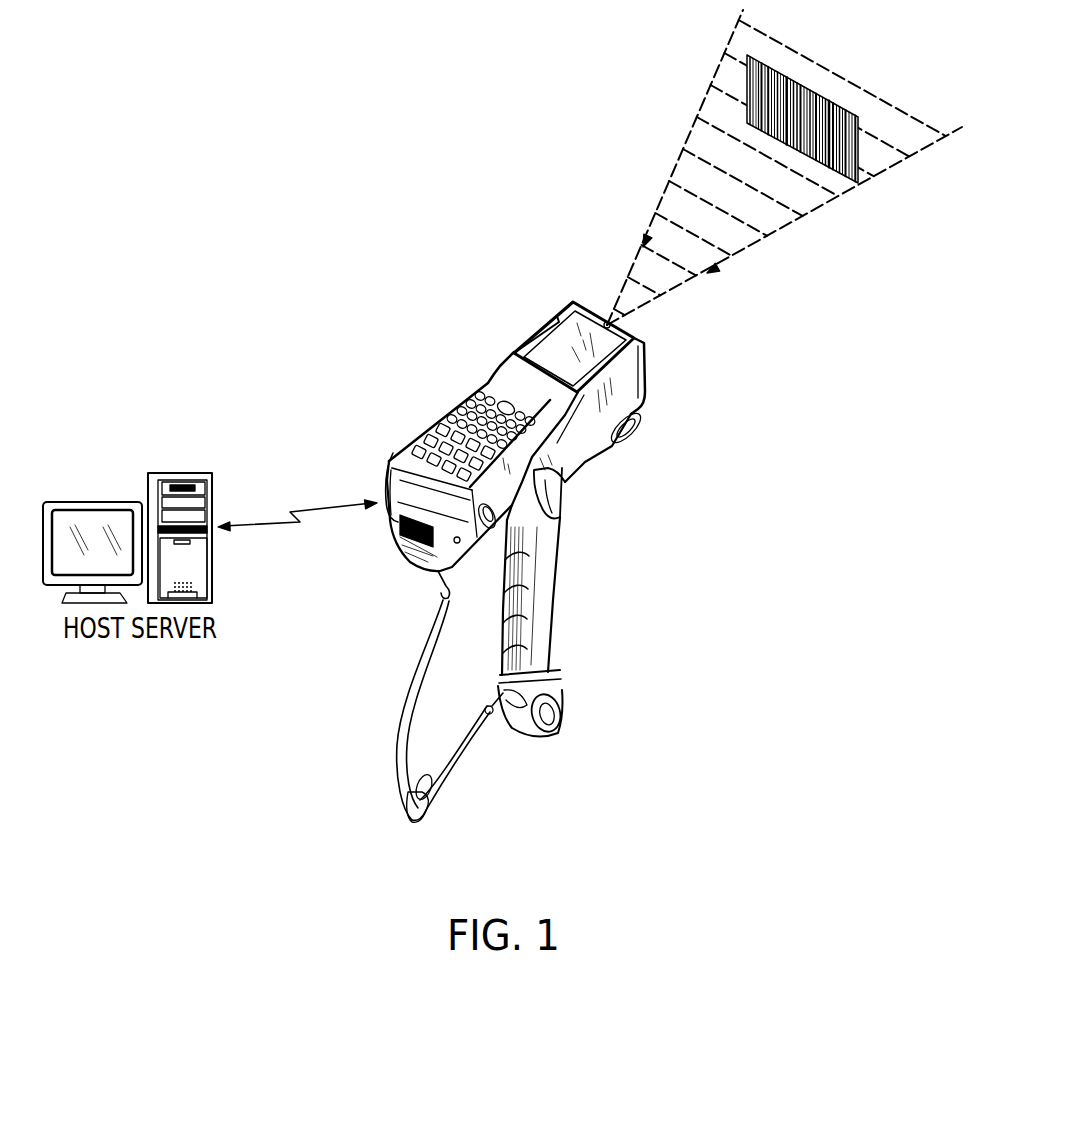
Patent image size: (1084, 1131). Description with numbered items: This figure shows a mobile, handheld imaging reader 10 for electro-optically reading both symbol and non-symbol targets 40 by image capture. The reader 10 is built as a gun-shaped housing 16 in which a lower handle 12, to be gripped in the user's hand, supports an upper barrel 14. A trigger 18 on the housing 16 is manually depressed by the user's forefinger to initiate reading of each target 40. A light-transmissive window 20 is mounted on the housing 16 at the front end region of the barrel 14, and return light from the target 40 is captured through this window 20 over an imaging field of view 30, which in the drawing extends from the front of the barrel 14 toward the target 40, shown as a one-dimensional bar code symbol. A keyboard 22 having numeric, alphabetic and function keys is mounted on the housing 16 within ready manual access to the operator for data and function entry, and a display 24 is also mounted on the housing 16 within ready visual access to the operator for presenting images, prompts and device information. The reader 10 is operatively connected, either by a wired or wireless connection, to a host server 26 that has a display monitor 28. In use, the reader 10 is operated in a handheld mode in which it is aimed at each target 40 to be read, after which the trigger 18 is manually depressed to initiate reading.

The imaging reader 10 is at (536, 529).
The handle 12 is at (548, 597).
The barrel 14 is at (577, 437).
The housing 16 is at (572, 292).
The trigger 18 is at (562, 512).
The light-transmissive window 20 is at (646, 360).
The keyboard 22 is at (430, 427).
The display 24 is at (557, 340).
The host server 26 is at (180, 473).
The display monitor 28 is at (93, 502).
The imaging field of view 30 is at (827, 194).
The target 40 is at (828, 85).